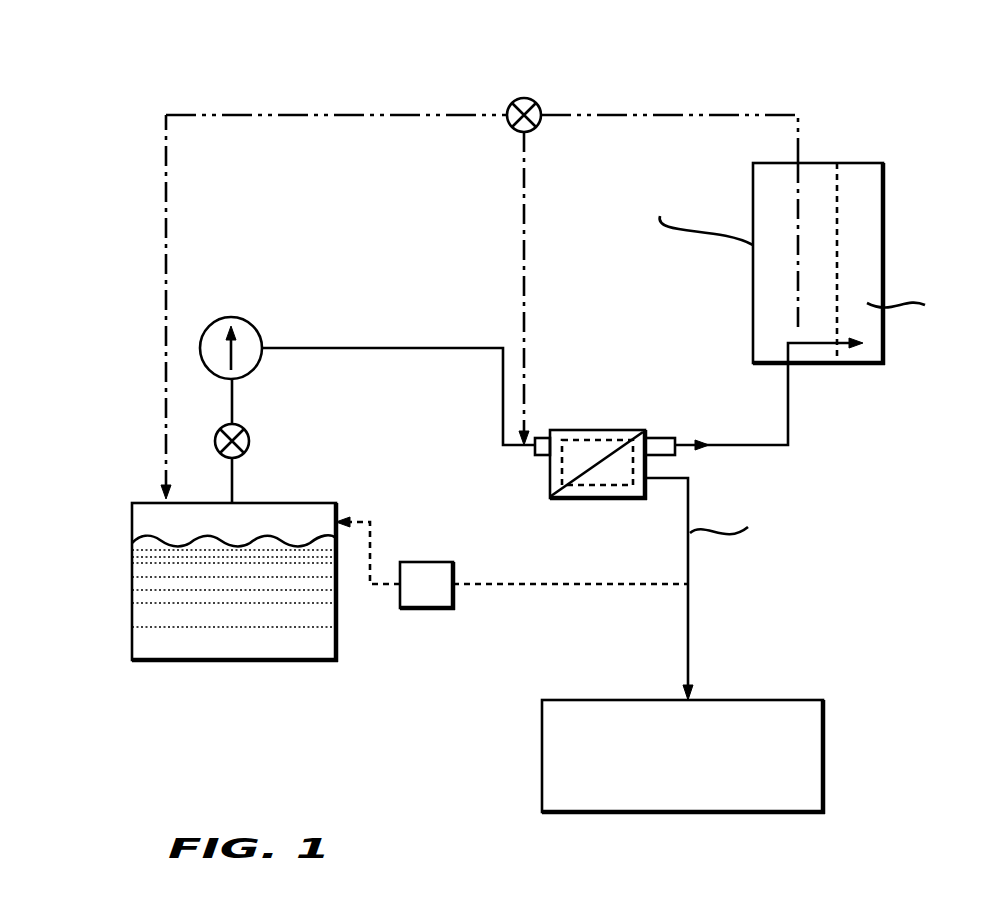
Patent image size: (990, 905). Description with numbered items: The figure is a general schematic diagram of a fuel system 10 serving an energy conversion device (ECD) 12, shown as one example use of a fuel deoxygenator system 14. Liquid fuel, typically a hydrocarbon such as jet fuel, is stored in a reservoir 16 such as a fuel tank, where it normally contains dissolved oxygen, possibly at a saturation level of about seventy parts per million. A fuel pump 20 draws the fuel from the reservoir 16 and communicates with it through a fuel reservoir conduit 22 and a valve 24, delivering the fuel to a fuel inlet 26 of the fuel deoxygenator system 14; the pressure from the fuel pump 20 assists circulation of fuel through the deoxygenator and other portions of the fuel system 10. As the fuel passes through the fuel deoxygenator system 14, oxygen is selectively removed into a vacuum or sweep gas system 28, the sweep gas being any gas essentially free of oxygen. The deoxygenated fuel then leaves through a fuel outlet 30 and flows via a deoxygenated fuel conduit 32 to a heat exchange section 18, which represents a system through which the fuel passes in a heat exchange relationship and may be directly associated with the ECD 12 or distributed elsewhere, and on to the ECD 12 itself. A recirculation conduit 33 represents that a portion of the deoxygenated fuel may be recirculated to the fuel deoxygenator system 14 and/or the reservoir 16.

The fuel system 10 is at (790, 92).
The energy conversion device (ECD) 12 is at (867, 188).
The fuel deoxygenator system 14 is at (575, 408).
The reservoir 16 is at (132, 568).
The heat exchange section 18 is at (753, 285).
The fuel pump 20 is at (228, 318).
The fuel reservoir conduit 22 is at (237, 395).
The valve 24 is at (250, 441).
The fuel inlet 26 is at (545, 457).
The vacuum or sweep gas system 28 is at (748, 656).
The fuel outlet 30 is at (650, 437).
The deoxygenated fuel conduit 32 is at (790, 446).
The recirculation conduit 33 is at (601, 112).